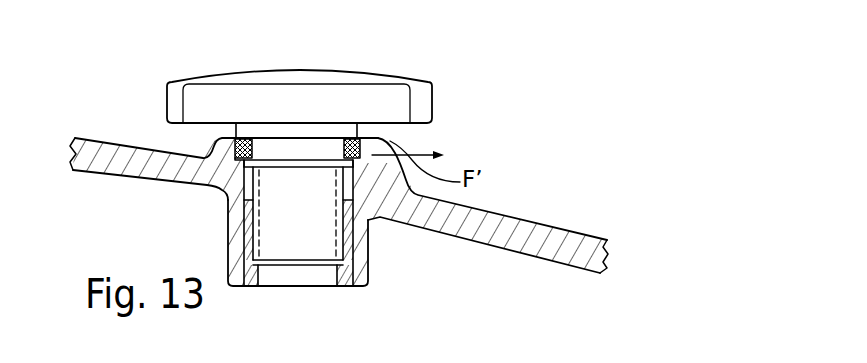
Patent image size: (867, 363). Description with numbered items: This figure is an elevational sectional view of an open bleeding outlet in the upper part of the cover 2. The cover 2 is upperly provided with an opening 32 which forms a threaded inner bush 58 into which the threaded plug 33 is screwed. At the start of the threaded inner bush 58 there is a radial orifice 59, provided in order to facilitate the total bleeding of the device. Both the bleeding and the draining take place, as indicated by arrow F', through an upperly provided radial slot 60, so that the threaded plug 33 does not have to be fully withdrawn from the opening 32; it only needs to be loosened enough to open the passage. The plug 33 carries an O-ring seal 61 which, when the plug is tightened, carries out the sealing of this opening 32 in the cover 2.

The threaded plug 33 is at (340, 92).
The O-ring seal 61 is at (355, 139).
The radial slot 60 is at (378, 147).
The cover 2 is at (483, 222).
The radial orifice 59 is at (252, 185).
The threaded inner bush 58 is at (353, 252).
The opening 32 is at (313, 273).